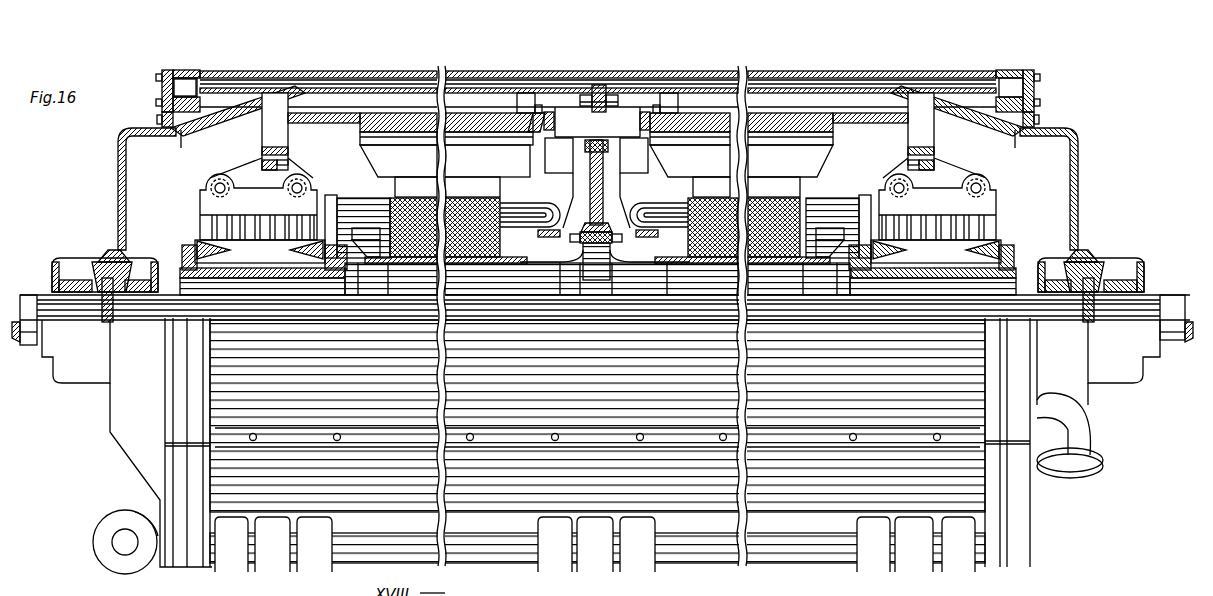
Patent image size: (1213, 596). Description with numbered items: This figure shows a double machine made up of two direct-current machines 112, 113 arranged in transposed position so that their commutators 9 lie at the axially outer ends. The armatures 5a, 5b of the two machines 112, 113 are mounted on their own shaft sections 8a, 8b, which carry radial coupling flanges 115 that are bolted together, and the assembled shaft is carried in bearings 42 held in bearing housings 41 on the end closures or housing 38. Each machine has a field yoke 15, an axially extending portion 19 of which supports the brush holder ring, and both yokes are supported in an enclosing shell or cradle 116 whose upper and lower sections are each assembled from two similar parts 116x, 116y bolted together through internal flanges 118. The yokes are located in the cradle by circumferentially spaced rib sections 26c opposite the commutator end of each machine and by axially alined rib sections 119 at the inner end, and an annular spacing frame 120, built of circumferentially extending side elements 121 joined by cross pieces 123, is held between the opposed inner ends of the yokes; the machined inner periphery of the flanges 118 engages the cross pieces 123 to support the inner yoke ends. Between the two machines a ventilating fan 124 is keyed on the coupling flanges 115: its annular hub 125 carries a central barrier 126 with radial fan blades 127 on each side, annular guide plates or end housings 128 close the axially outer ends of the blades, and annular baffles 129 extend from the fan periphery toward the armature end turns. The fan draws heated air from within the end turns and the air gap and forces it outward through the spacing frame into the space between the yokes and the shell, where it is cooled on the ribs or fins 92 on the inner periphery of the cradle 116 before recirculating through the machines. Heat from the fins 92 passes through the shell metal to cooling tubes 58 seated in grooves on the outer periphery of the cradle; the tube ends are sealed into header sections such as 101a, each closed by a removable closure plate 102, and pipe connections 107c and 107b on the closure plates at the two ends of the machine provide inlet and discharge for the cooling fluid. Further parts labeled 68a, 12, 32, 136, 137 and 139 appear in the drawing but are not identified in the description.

The header section 101a is at (178, 70).
The flange bolt 68a is at (192, 85).
The closure plate 102 is at (165, 100).
The cooling ribs or fins 92 is at (333, 98).
The cradle part 116x is at (378, 80).
The cradle part 116y is at (825, 80).
The enclosing shell or cradle 116 is at (598, 85).
The rib sections 119 is at (517, 100).
The side elements 121 is at (540, 100).
The annular spacing frame 120 is at (578, 95).
The internal flanges 118 is at (590, 95).
The cross pieces 123 is at (626, 95).
The rib sections 26c is at (265, 105).
The axially extending portion 19 is at (335, 120).
The field yoke 15 is at (410, 140).
The machine 112 is at (352, 176).
The machine 113 is at (862, 176).
The annular guide plates or end housings 128 is at (545, 160).
The ventilating fan 124 is at (590, 150).
The armature 5a is at (392, 205).
The armature 5b is at (798, 205).
The radial fan blades 127 is at (552, 176).
The annular baffles or barriers 129 is at (573, 185).
The central barrier 126 is at (620, 205).
The annular hub 125 is at (606, 222).
The brush holder 12 is at (205, 228).
The commutator 9 is at (598, 259).
The end closure or housing 38 is at (112, 170).
The bearing housing 41 is at (105, 262).
The bearing 42 is at (55, 270).
The shaft section 8a is at (28, 345).
The shaft section 8b is at (1168, 340).
The radial coupling flanges 115 is at (583, 253).
The pipe connection 107c is at (1040, 410).
The pipe connection 107b is at (140, 510).
The armature coil end 32 is at (232, 568).
The component 137 is at (579, 591).
The component 139 is at (629, 591).
The cooling tubes 58 is at (699, 591).
The component 136 is at (762, 591).